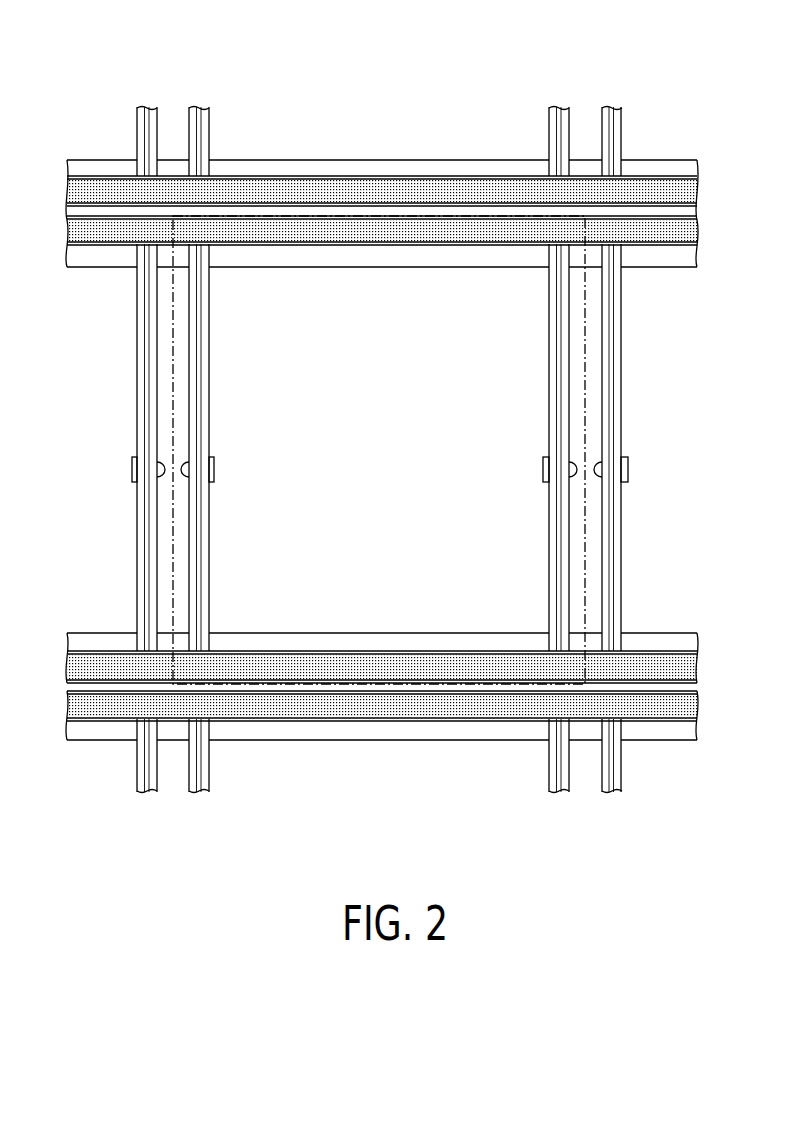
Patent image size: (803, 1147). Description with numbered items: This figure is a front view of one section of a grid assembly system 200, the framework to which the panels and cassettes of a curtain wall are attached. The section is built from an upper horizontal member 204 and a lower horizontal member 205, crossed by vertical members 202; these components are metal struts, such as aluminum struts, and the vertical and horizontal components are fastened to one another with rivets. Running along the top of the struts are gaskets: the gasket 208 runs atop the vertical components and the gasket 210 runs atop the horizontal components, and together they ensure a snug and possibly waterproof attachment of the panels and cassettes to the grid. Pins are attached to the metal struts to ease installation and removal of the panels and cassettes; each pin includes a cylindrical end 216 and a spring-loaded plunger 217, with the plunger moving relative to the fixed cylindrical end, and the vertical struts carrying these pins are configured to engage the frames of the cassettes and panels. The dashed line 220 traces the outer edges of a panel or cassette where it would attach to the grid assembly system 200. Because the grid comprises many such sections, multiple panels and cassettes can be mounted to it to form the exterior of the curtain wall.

The grid assembly system 200 is at (126, 43).
The vertical members 202 is at (550, 338).
The upper horizontal member 204 is at (425, 640).
The lower horizontal member 205 is at (425, 735).
The gasket 208 is at (145, 580).
The gasket 210 is at (450, 190).
The cylindrical end 216 is at (214, 463).
The spring-loaded plunger 217 is at (180, 478).
The dashed line 220 is at (586, 528).